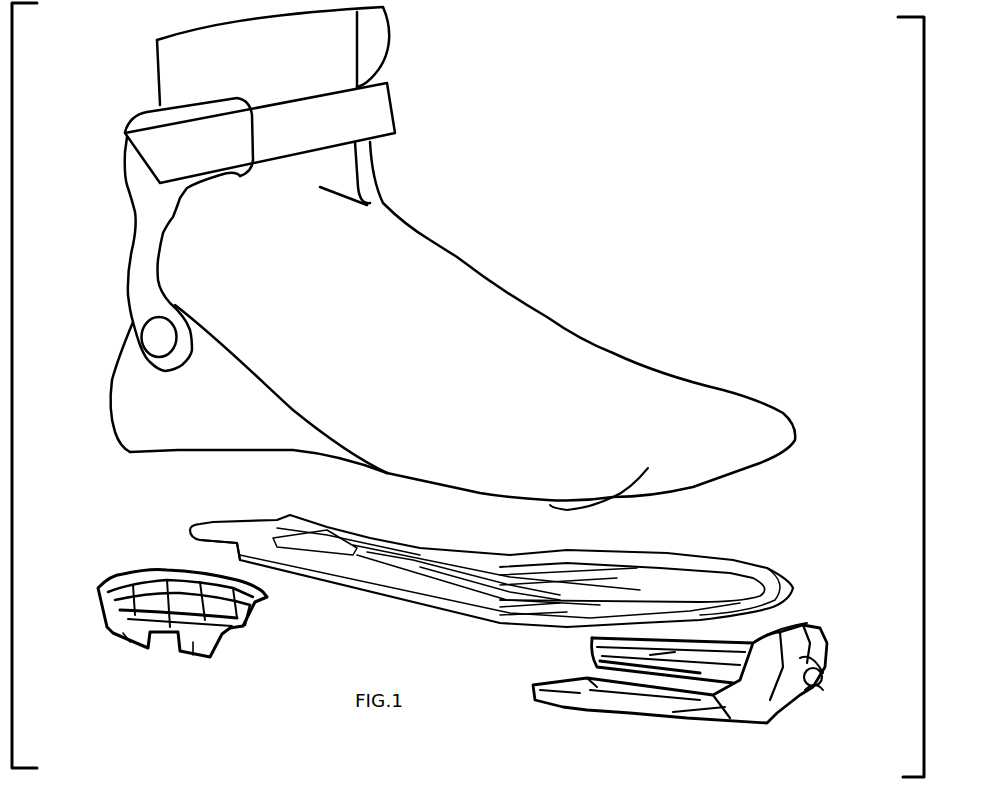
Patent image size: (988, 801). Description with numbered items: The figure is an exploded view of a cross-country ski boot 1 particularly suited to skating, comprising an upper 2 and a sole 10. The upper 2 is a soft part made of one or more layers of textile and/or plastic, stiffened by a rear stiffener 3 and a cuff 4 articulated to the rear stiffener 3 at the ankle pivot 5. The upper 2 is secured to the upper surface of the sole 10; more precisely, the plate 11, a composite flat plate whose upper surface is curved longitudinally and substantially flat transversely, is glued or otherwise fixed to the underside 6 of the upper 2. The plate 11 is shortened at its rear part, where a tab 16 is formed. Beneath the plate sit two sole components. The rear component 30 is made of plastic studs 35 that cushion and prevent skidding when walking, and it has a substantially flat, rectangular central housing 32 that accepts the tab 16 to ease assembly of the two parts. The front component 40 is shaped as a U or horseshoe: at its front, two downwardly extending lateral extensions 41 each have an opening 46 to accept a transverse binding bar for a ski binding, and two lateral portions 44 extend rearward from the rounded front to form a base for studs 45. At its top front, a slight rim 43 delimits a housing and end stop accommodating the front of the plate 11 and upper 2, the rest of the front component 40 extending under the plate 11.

The cross-country ski boot 1 is at (668, 272).
The upper 2 is at (432, 298).
The rear stiffener 3 is at (188, 395).
The cuff 4 is at (160, 212).
The ankle pivot 5 is at (157, 337).
The underside of the upper 6 is at (648, 468).
The sole 10 is at (803, 547).
The plate 11 is at (710, 558).
The tab 16 is at (203, 525).
The rear component 30 is at (103, 623).
The central housing 32 is at (245, 625).
The studs 35 is at (123, 633).
The front component 40 is at (783, 705).
The lateral extensions 41 is at (823, 673).
The rim 43 is at (807, 623).
The lateral portions 44 is at (675, 652).
The studs 45 is at (673, 712).
The opening 46 is at (812, 695).